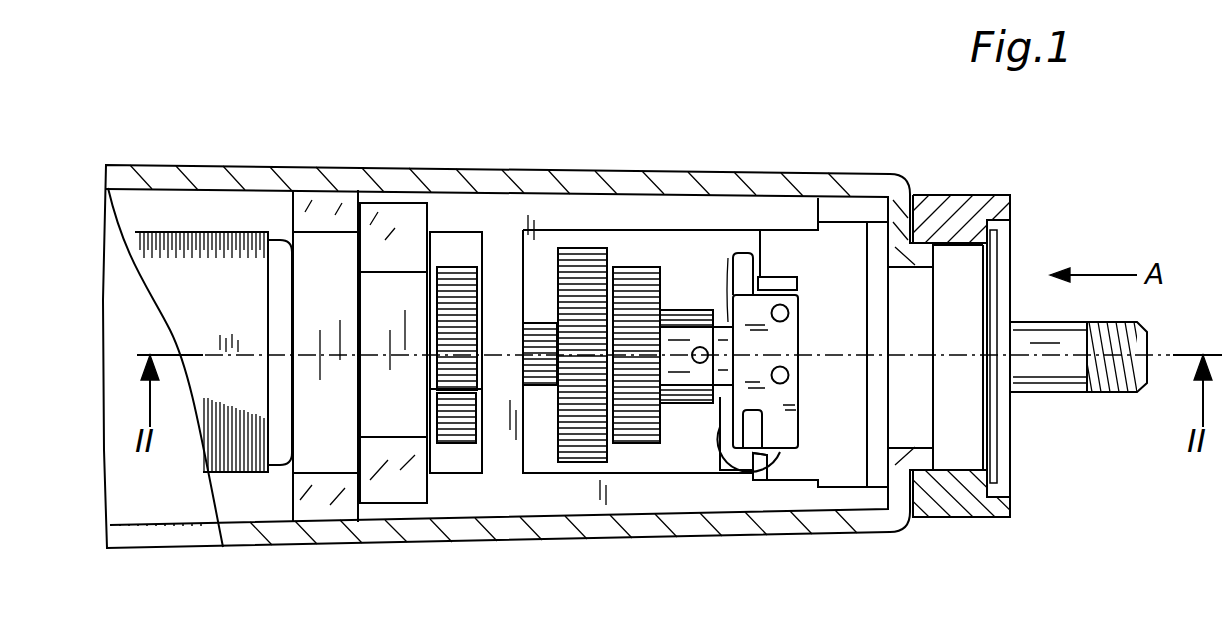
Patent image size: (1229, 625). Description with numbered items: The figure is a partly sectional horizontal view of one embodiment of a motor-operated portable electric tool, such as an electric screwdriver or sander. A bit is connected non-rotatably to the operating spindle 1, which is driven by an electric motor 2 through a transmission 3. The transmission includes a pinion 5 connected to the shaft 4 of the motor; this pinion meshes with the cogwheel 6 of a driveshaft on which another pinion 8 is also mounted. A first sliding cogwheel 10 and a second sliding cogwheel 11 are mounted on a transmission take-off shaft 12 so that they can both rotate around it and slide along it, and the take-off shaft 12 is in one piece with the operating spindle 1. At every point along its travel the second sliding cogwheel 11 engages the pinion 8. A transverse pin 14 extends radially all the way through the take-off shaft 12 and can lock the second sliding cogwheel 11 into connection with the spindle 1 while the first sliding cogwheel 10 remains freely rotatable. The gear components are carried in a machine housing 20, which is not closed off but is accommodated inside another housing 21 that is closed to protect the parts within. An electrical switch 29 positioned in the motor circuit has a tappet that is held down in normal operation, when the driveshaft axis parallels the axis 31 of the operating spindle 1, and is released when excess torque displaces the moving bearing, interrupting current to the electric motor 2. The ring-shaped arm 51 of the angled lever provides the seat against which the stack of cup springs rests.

The operating spindle 1 is at (1077, 333).
The electric motor 2 is at (232, 252).
The transmission 3 is at (660, 250).
The shaft 4 is at (457, 318).
The pinion 5 is at (437, 325).
The cogwheel 6 is at (460, 433).
The pinion 8 is at (693, 363).
The first sliding cogwheel 10 is at (588, 250).
The second sliding cogwheel 11 is at (630, 267).
The transmission take-off shaft 12 is at (540, 330).
The transverse pin 14 is at (677, 392).
The machine housing 20 is at (577, 487).
The housing 21 is at (470, 532).
The electrical switch 29 is at (747, 268).
The axis 31 is at (830, 355).
The arm 51 is at (767, 455).